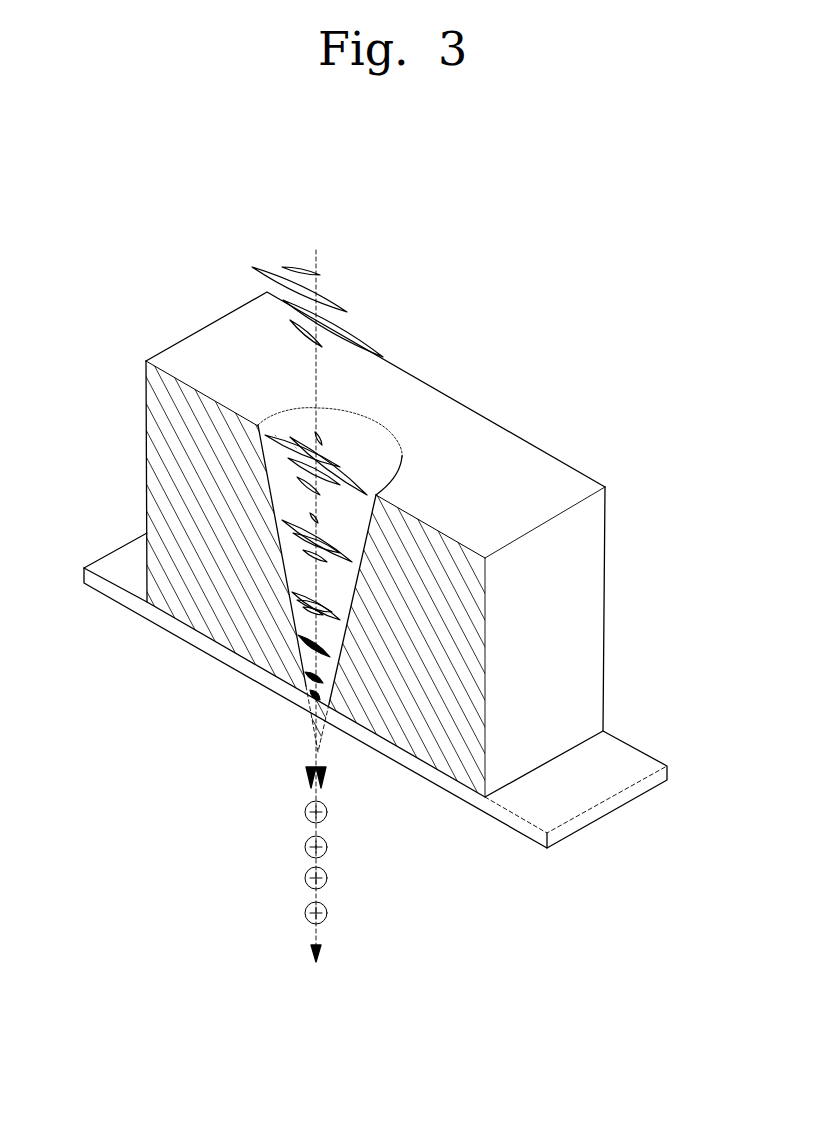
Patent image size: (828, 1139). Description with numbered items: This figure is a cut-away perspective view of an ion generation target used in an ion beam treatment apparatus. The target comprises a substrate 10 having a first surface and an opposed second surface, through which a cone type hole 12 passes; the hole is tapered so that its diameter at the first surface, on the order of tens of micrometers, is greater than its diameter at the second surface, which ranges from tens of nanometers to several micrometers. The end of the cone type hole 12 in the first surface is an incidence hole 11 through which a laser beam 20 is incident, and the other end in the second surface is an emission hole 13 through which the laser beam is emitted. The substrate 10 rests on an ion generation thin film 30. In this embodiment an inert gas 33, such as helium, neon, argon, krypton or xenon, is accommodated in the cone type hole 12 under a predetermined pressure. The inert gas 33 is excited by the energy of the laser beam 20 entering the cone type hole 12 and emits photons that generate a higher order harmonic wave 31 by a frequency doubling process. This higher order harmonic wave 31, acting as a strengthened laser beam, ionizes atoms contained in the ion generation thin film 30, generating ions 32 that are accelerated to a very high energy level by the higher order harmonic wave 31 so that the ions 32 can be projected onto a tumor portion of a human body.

The substrate 10 is at (507, 453).
The incidence hole 11 is at (273, 417).
The cone type hole 12 is at (357, 448).
The emission hole 13 is at (308, 698).
The laser beam 20 is at (346, 293).
The ion generation thin film 30 is at (620, 756).
The higher order harmonic wave 31 is at (305, 782).
The ions 32 is at (303, 877).
The inert gas 33 is at (270, 463).